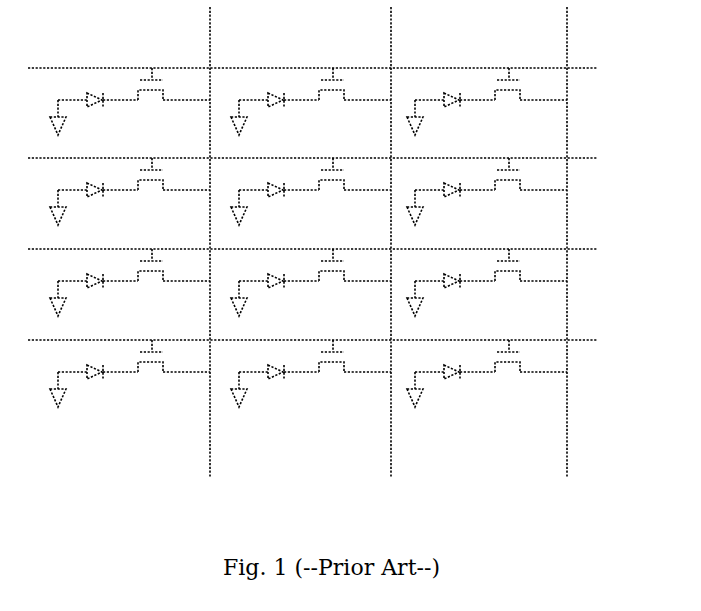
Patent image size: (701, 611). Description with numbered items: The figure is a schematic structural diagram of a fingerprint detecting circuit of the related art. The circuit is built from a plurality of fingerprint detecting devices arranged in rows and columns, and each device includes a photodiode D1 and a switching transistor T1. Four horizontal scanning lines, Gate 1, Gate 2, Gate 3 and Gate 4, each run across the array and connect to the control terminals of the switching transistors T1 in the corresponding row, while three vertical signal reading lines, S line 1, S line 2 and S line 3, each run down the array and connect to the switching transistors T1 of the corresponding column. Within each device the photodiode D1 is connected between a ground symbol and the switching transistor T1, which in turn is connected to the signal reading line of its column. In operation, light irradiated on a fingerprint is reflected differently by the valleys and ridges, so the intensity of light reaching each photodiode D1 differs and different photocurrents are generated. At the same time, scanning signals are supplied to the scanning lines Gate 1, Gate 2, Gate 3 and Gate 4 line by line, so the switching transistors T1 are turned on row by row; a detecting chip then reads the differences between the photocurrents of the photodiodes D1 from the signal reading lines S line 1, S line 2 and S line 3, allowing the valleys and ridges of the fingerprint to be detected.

The photodiode D1 is at (97, 114).
The switching transistor T1 is at (150, 93).
The scanning line Gate 1 is at (312, 59).
The scanning line Gate 2 is at (310, 149).
The scanning line Gate 3 is at (310, 240).
The scanning line Gate 4 is at (310, 331).
The signal reading line S line 1 is at (245, 242).
The signal reading line S line 2 is at (430, 242).
The signal reading line S line 3 is at (606, 242).